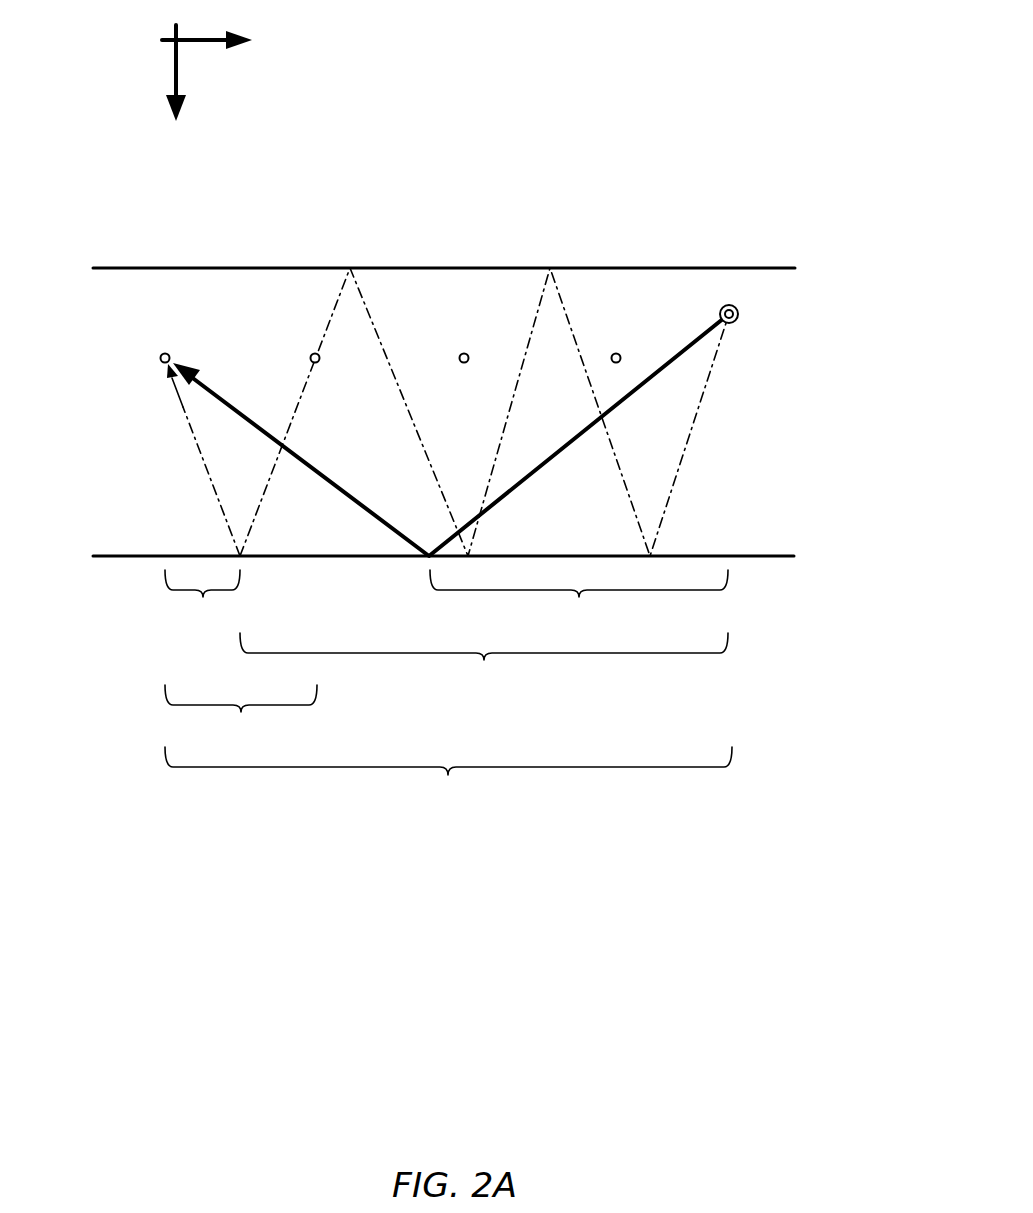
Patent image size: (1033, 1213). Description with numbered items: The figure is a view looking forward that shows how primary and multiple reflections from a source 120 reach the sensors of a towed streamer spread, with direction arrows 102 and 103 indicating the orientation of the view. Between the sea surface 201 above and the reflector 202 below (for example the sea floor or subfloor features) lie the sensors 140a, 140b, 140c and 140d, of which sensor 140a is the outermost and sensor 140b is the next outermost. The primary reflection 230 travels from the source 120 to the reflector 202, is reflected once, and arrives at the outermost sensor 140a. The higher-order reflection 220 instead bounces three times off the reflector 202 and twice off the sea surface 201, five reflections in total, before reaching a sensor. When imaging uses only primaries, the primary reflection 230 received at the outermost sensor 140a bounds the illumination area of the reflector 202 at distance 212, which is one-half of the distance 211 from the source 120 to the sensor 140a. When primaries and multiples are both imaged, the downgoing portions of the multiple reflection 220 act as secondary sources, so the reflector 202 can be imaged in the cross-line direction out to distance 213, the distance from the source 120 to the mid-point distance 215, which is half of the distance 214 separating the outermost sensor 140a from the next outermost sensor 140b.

The first axis direction 102 is at (231, 42).
The second axis direction 103 is at (179, 89).
The source 120 is at (775, 333).
The outermost sensor 140a is at (116, 333).
The next outermost sensor 140b is at (266, 333).
The sensor 140c is at (403, 282).
The sensor 140d is at (557, 265).
The sea surface 201 is at (444, 226).
The reflector 202 is at (474, 515).
The distance 211 is at (448, 777).
The distance 212 is at (579, 602).
The distance 213 is at (484, 665).
The distance 214 is at (241, 716).
The mid-point distance 215 is at (202, 599).
The higher-order reflection 220 is at (414, 412).
The primary reflection 230 is at (385, 435).